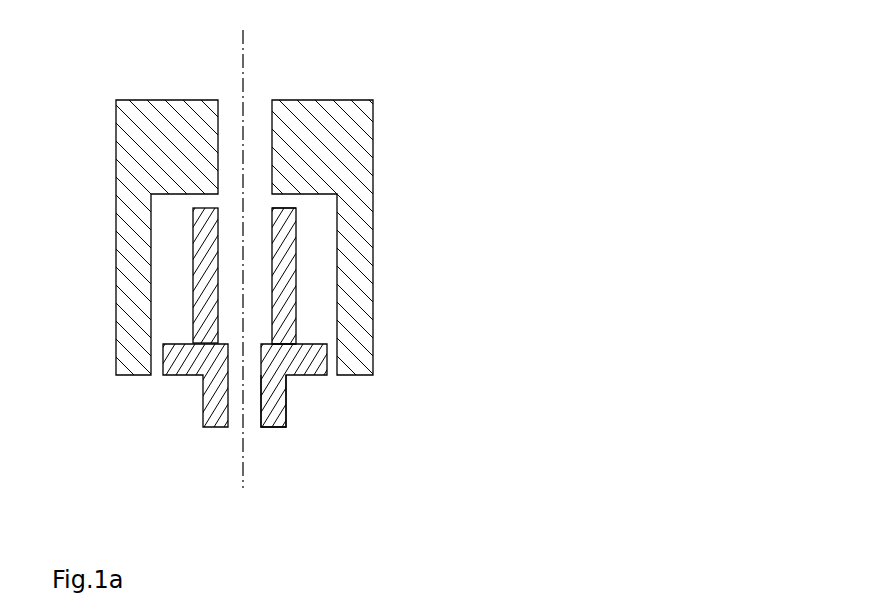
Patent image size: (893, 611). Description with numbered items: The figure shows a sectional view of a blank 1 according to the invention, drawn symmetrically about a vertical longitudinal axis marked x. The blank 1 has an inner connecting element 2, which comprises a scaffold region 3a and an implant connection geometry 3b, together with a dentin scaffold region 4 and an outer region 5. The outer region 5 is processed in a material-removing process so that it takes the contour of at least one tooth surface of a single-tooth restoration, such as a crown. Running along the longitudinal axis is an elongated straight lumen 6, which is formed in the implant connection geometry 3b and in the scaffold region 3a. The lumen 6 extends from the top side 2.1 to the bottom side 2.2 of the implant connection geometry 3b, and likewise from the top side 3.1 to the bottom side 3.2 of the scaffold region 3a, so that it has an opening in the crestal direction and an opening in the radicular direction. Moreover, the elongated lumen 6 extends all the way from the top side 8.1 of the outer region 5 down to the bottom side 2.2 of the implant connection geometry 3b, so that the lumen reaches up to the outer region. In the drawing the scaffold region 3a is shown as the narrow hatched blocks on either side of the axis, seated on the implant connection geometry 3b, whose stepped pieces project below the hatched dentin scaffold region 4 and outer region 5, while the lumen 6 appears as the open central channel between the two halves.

The blank 1 is at (360, 84).
The inner connecting element 2 is at (328, 293).
The top side of the implant connection geometry 2.1 is at (205, 345).
The bottom side of the implant connection geometry 2.2 is at (274, 428).
The scaffold region 3a is at (206, 243).
The implant connection geometry 3b is at (282, 402).
The top side of the scaffold region 3.1 is at (290, 207).
The bottom side of the scaffold region 3.2 is at (282, 343).
The dentin scaffold region 4 is at (328, 330).
The outer region 5 is at (354, 187).
The elongated straight lumen 6 is at (232, 124).
The top side of the outer region 8.1 is at (279, 100).